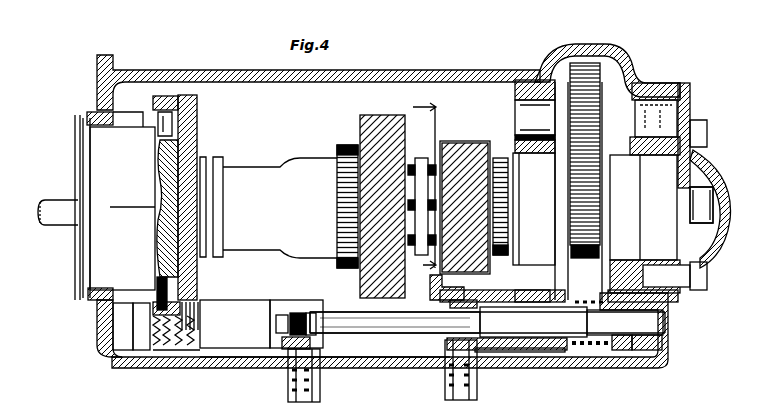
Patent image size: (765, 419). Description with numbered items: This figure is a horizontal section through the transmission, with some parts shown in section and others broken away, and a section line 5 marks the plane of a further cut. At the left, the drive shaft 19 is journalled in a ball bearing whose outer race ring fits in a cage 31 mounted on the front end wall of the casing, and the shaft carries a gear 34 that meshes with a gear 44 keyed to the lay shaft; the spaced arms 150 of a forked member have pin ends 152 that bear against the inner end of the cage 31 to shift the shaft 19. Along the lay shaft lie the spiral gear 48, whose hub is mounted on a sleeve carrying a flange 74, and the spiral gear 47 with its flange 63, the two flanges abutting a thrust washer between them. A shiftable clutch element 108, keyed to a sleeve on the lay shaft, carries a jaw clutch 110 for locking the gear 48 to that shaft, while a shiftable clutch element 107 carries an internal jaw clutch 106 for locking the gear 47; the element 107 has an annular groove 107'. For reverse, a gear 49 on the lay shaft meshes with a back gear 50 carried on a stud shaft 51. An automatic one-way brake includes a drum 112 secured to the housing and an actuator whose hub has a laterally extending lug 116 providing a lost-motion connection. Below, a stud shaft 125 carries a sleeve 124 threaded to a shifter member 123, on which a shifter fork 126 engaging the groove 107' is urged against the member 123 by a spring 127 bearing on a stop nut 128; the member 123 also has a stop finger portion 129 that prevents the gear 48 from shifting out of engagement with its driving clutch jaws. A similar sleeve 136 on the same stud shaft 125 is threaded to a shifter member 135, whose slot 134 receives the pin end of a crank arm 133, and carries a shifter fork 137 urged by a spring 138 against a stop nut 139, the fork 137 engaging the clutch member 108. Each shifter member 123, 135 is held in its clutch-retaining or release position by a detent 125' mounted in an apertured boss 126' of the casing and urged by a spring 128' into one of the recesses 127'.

The shaft 19 is at (65, 235).
The cage 31 is at (165, 142).
The gear 34 is at (175, 228).
The gear 44 is at (198, 142).
The spaced arms 150 is at (170, 96).
The pin ends 152 is at (180, 128).
The shiftable clutch element 108 is at (297, 168).
The jaw clutch 110 is at (345, 268).
The spiral gear 48 is at (370, 120).
The flange 74 is at (420, 158).
The section line 5 is at (424, 184).
The spiral gear 47 is at (470, 140).
The flange 63 is at (447, 148).
The internal jaw clutch 106 is at (500, 256).
The shiftable clutch element 107 is at (517, 139).
The annular groove 107' is at (534, 209).
The stud shaft 51 is at (530, 100).
The back gear 50 is at (588, 63).
The gear 49 is at (580, 258).
The shifter fork 126 is at (532, 287).
The drum 112 is at (660, 200).
The lug 116 is at (685, 207).
The stud shaft 125 is at (513, 322).
The stop finger portion 129 is at (395, 320).
The recesses 127' is at (533, 322).
The sleeve 124 is at (560, 325).
The spring 127 is at (590, 372).
The stop nut 128 is at (638, 368).
The shifter member 123 is at (447, 347).
The apertured boss 126' is at (520, 377).
The detent 125' is at (379, 369).
The spring 128' is at (380, 381).
The crank arm 133 is at (270, 370).
The slot 134 is at (276, 322).
The shifter member 135 is at (283, 305).
The shifter fork 137 is at (218, 300).
The sleeve 136 is at (188, 325).
The spring 138 is at (173, 350).
The stop nut 139 is at (143, 350).